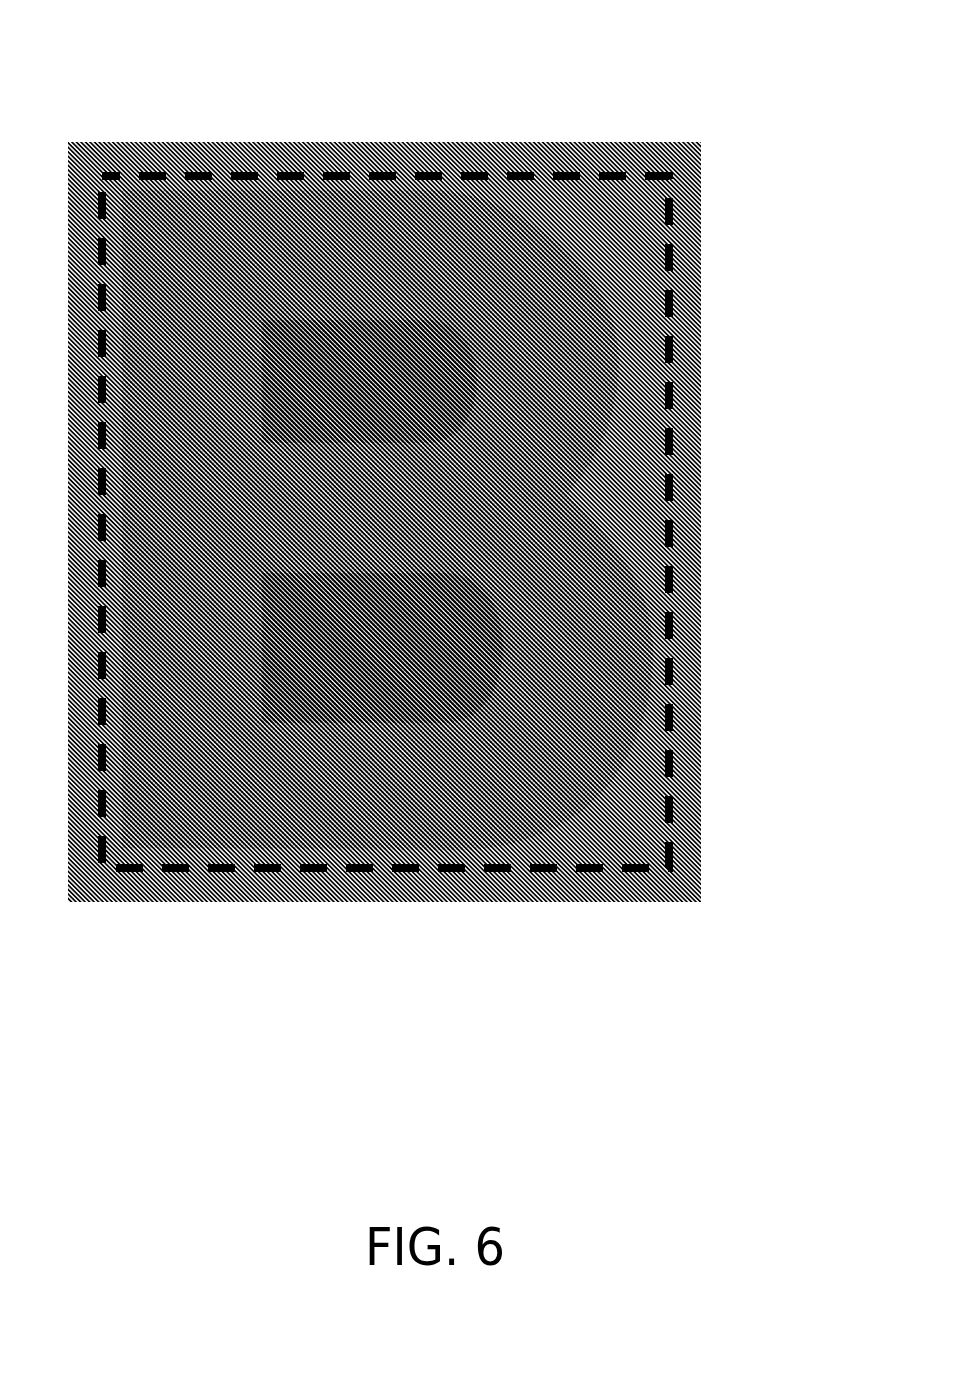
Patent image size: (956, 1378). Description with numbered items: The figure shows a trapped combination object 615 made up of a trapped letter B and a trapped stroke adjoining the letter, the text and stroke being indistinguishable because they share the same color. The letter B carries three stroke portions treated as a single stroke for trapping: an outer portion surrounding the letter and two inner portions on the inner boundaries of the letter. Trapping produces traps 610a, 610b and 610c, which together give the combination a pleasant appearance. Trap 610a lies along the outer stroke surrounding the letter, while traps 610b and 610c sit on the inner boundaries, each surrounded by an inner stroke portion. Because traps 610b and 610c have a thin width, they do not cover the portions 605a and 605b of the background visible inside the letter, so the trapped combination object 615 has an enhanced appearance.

The portion of the background 605a is at (383, 392).
The portion of the background 605b is at (470, 647).
The trap 610a is at (560, 232).
The trap 610b is at (473, 398).
The trap 610c is at (478, 600).
The trapped combination object 615 is at (670, 522).